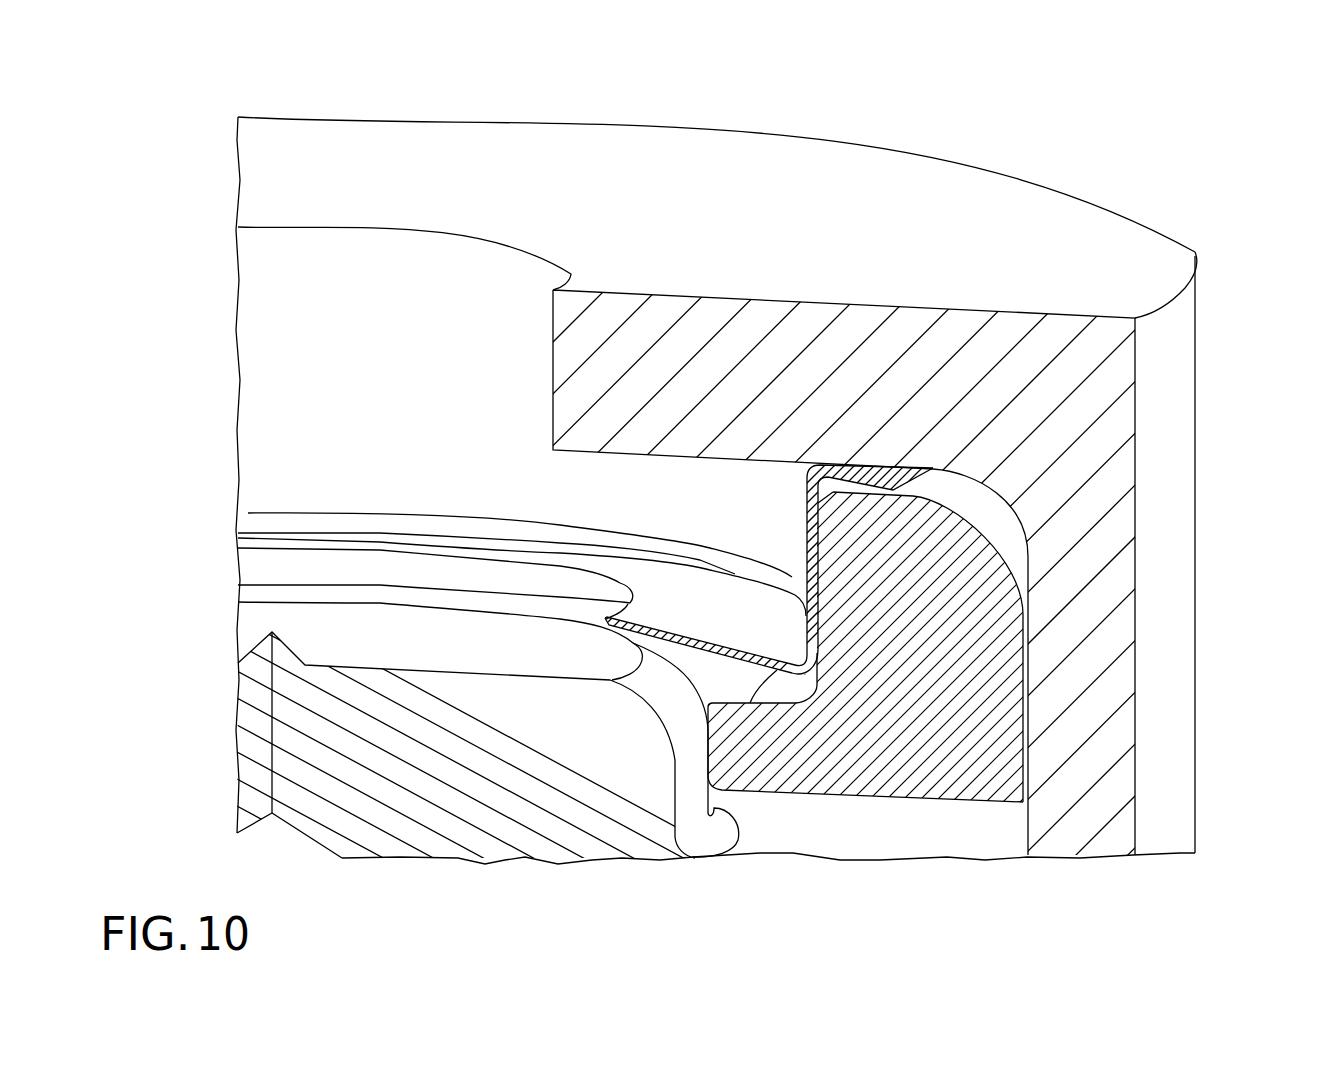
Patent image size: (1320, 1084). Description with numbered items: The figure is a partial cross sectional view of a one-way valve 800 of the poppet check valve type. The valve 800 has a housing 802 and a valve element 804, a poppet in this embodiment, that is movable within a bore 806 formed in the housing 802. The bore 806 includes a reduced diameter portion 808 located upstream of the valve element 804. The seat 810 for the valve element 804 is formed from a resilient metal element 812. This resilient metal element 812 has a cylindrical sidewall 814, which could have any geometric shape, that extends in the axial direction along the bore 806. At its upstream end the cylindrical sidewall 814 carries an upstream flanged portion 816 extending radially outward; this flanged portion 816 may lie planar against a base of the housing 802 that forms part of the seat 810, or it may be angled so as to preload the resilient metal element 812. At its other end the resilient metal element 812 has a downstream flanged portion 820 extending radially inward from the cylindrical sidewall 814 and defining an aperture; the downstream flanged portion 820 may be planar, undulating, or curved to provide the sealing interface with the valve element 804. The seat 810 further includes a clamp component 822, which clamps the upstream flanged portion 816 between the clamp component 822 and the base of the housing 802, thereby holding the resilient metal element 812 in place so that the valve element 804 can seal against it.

The one-way valve 800 is at (1215, 225).
The housing 802 is at (1087, 369).
The valve element 804 is at (459, 782).
The bore 806 is at (392, 118).
The reduced diameter portion 808 is at (449, 265).
The seat 810 is at (1010, 320).
The resilient metal element 812 is at (737, 511).
The cylindrical sidewall 814 is at (780, 478).
The upstream flanged portion 816 is at (870, 482).
The downstream flanged portion 820 is at (728, 619).
The clamp component 822 is at (440, 533).